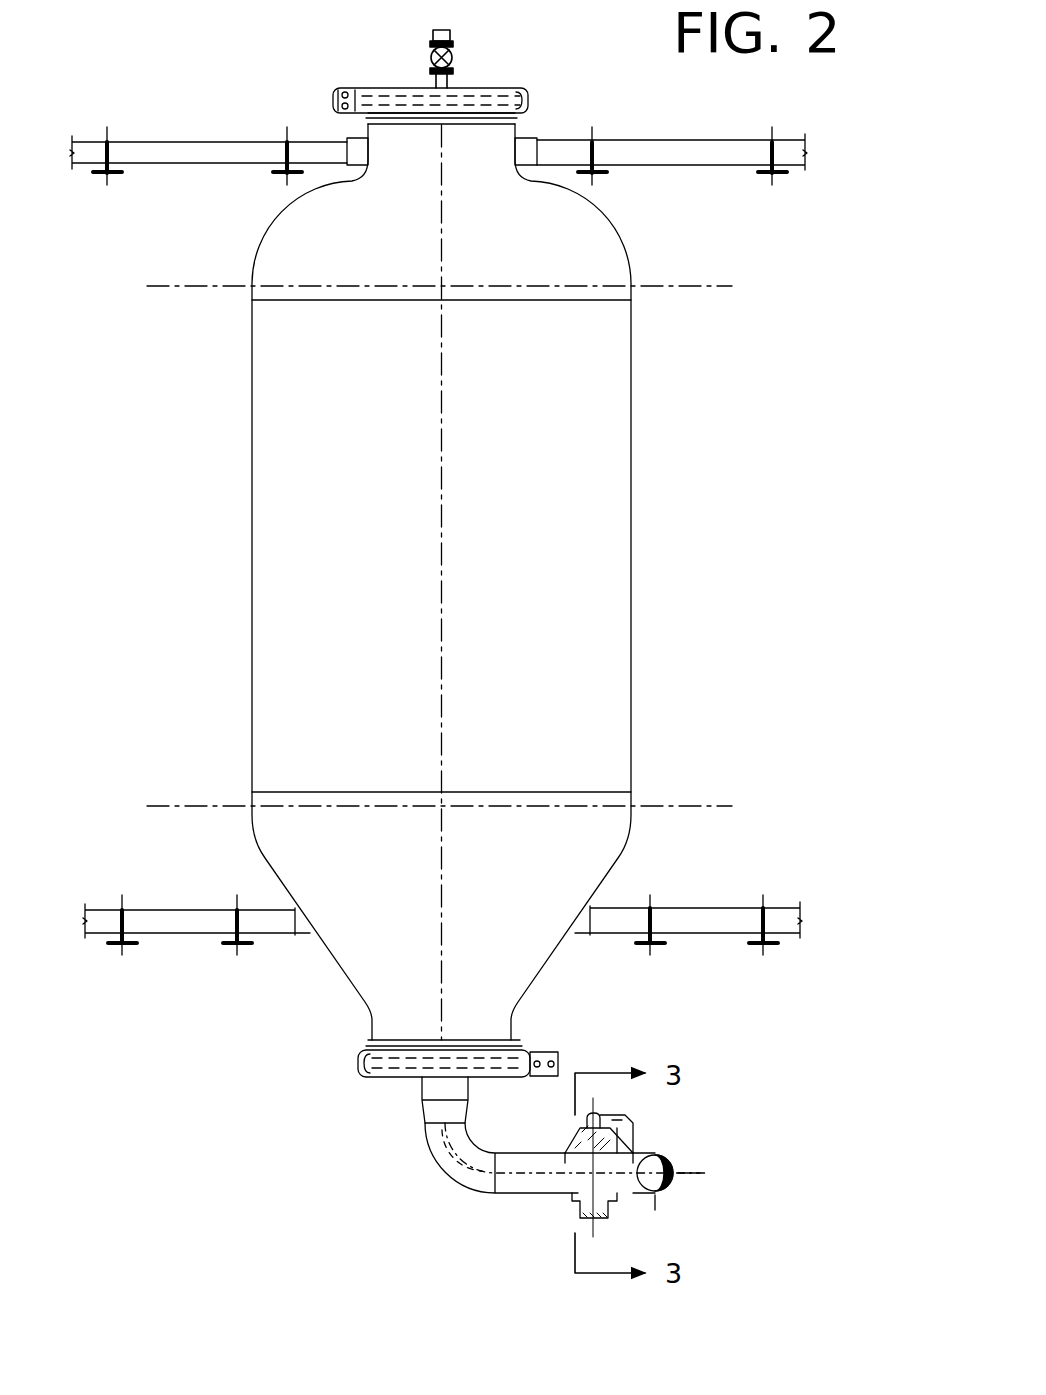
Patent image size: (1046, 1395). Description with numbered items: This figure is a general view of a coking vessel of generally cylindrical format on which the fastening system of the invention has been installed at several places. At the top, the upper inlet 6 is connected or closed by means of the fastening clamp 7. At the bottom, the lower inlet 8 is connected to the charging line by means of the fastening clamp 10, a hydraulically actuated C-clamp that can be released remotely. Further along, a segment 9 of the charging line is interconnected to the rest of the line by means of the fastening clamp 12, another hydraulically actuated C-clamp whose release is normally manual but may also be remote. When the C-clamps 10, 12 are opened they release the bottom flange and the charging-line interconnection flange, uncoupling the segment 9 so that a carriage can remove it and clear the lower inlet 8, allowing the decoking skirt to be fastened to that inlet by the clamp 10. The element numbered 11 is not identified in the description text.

The upper inlet 6 is at (503, 85).
The fastening clamp 7 is at (335, 85).
The lower inlet 8 is at (400, 1079).
The segment of the charging line 9 is at (507, 1195).
The fastening clamp 10 is at (539, 1049).
The fitting nut 11 is at (615, 1214).
The fastening clamp 12 is at (627, 1138).